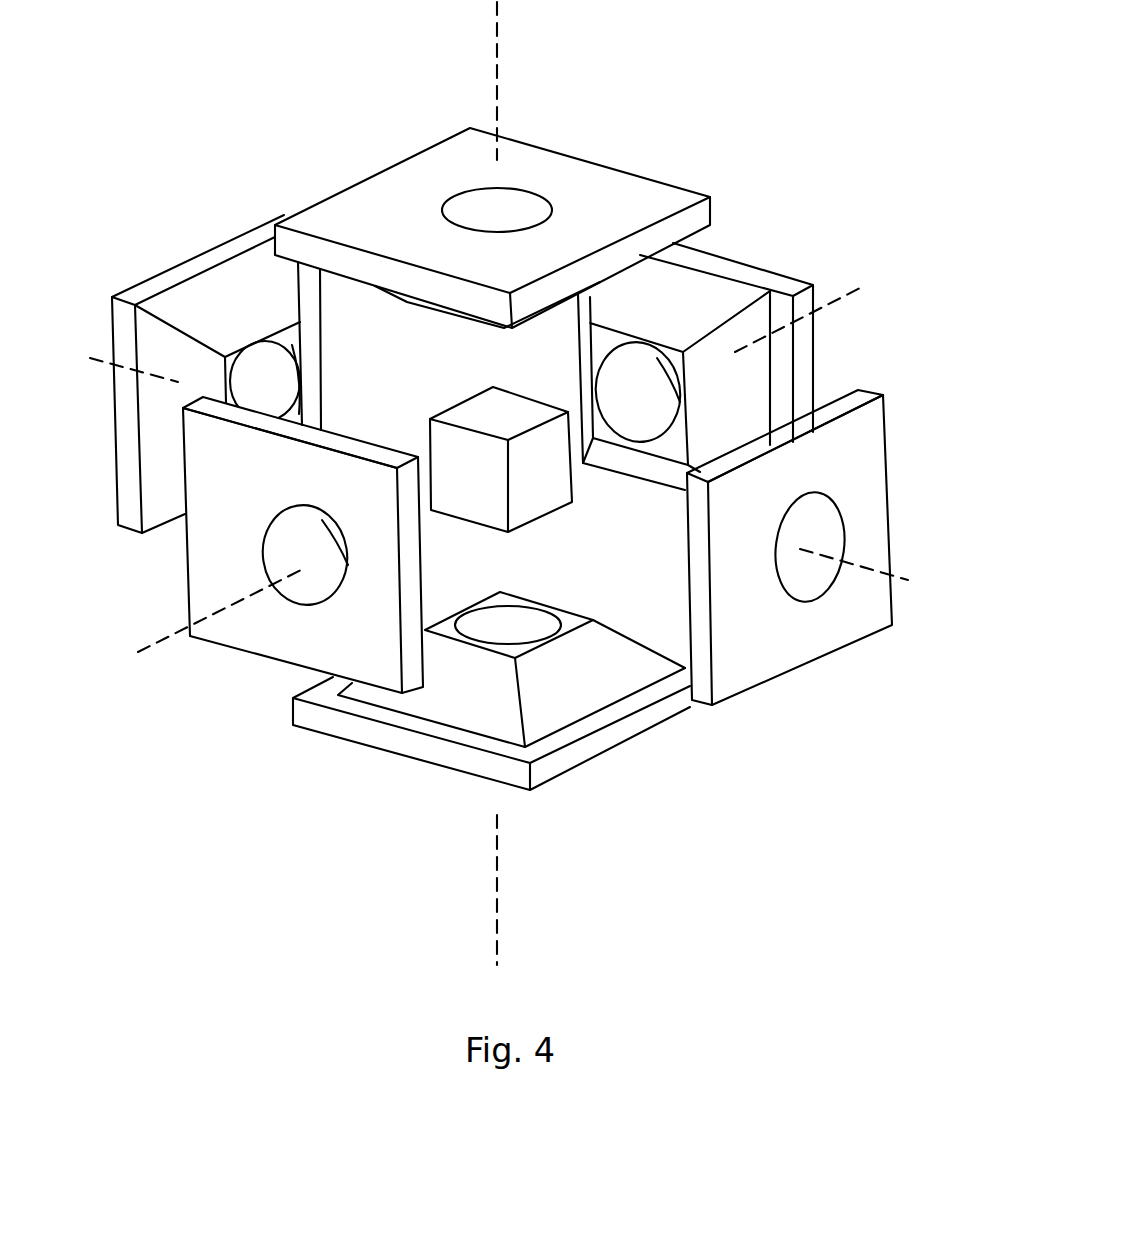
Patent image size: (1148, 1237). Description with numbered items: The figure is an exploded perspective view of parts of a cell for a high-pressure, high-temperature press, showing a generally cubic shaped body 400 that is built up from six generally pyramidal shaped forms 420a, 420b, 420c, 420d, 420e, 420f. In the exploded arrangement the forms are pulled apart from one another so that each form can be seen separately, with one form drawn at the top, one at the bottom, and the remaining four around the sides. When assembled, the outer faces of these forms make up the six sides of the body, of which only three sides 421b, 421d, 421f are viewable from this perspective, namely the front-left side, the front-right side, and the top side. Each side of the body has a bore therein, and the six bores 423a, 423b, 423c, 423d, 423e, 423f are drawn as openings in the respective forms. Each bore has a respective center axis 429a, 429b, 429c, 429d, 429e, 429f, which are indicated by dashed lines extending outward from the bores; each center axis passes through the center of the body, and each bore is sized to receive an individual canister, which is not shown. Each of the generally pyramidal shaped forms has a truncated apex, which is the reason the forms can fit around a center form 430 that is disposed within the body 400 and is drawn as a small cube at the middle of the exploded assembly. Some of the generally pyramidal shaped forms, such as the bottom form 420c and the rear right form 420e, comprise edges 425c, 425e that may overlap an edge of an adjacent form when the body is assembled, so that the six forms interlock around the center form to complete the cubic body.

The generally cubic shaped body 400 is at (502, 483).
The generally pyramidal shaped form 420a is at (246, 366).
The generally pyramidal shaped form 420b is at (263, 626).
The generally pyramidal shaped form 420c is at (462, 778).
The generally pyramidal shaped form 420d is at (801, 551).
The generally pyramidal shaped form 420e is at (741, 326).
The generally pyramidal shaped form 420f is at (492, 165).
The side 421b is at (253, 633).
The side 421d is at (872, 440).
The side 421f is at (611, 181).
The bore 423a is at (272, 380).
The bore 423b is at (303, 578).
The bore 423c is at (493, 625).
The bore 423d is at (801, 567).
The bore 423e is at (643, 381).
The bore 423f is at (494, 213).
The edge 425c is at (511, 709).
The edge 425e is at (744, 326).
The center axis 429a is at (157, 373).
The center axis 429b is at (176, 636).
The center axis 429c is at (497, 882).
The center axis 429d is at (860, 563).
The center axis 429e is at (843, 301).
The center axis 429f is at (505, 52).
The center form 430 is at (540, 488).